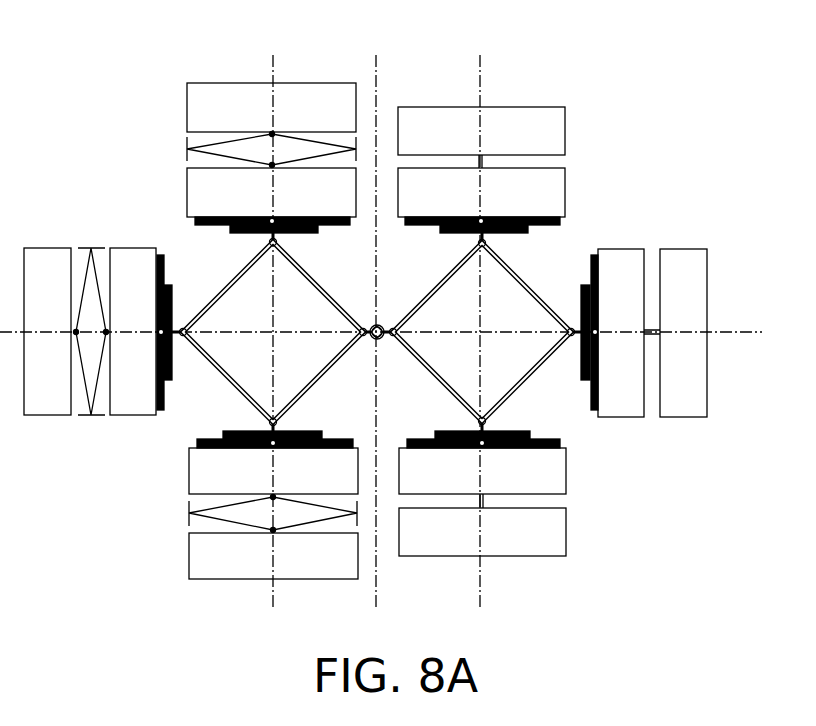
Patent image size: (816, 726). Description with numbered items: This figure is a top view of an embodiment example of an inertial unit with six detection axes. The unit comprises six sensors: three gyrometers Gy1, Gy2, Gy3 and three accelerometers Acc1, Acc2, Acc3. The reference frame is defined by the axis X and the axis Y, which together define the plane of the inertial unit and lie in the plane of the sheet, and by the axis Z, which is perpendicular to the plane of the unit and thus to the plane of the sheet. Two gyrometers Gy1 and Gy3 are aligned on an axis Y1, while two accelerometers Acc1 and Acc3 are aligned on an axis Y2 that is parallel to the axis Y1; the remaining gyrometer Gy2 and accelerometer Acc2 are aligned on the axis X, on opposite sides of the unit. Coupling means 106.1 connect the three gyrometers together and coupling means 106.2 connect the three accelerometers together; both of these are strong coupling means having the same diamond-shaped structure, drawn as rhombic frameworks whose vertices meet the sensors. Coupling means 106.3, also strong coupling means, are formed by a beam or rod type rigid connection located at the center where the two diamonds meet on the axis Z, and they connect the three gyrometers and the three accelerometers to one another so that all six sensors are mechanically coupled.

The coupling means 106.1 is at (190, 411).
The coupling means 106.2 is at (566, 428).
The coupling means 106.3 is at (369, 342).
The gyrometer Gy1 is at (173, 129).
The gyrometer Gy2 is at (176, 236).
The gyrometer Gy3 is at (172, 494).
The accelerometer Acc1 is at (595, 118).
The accelerometer Acc2 is at (656, 228).
The accelerometer Acc3 is at (583, 530).
The axis X is at (728, 333).
The axis Y is at (377, 60).
The axis Y1 is at (274, 60).
The axis Y2 is at (481, 60).
The axis Z is at (378, 340).